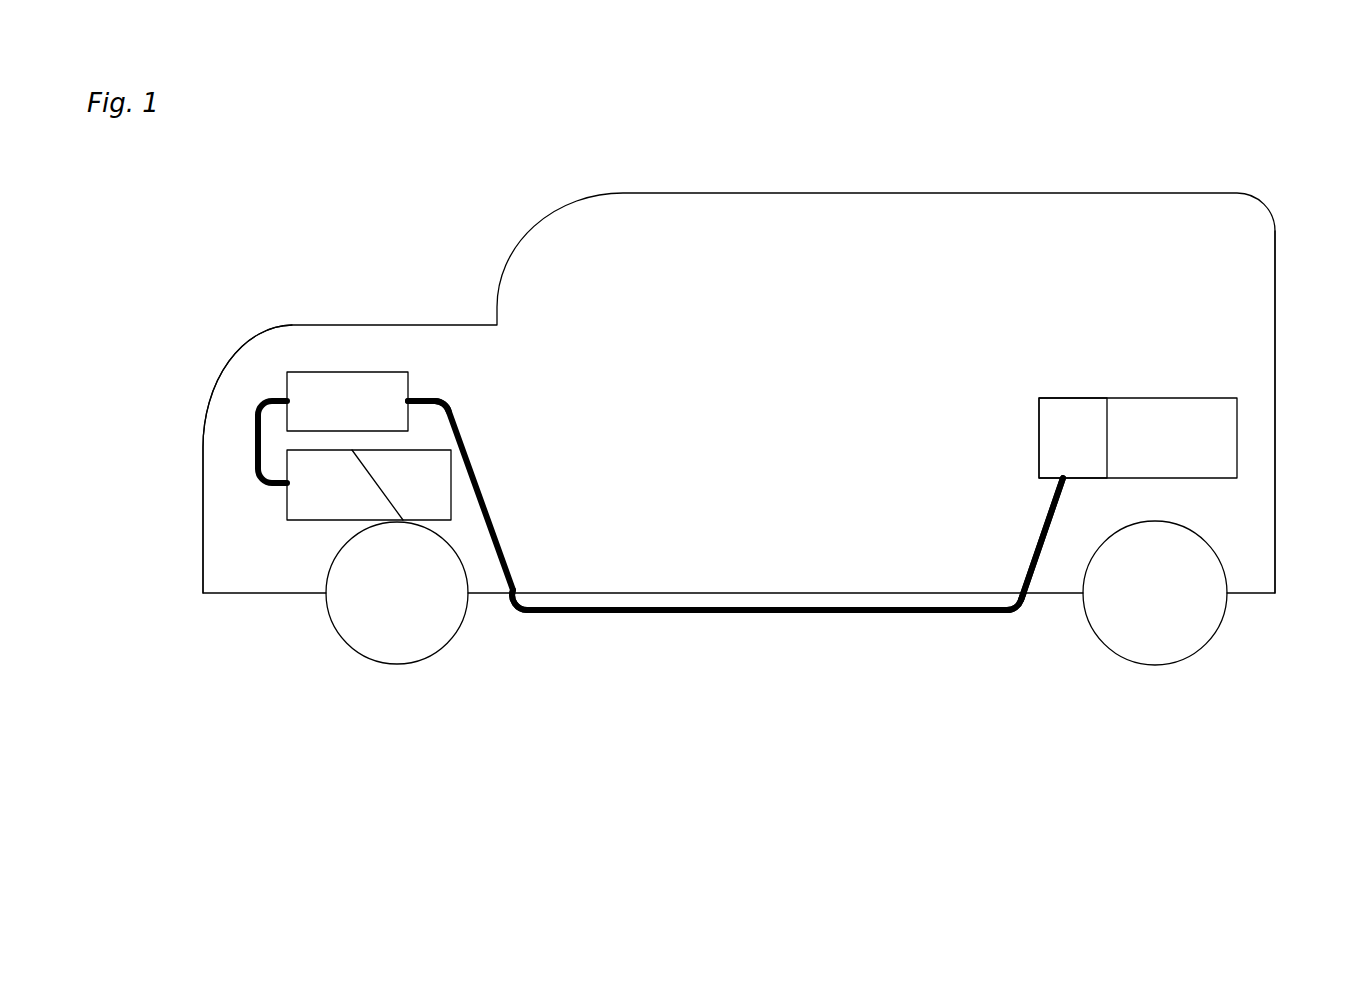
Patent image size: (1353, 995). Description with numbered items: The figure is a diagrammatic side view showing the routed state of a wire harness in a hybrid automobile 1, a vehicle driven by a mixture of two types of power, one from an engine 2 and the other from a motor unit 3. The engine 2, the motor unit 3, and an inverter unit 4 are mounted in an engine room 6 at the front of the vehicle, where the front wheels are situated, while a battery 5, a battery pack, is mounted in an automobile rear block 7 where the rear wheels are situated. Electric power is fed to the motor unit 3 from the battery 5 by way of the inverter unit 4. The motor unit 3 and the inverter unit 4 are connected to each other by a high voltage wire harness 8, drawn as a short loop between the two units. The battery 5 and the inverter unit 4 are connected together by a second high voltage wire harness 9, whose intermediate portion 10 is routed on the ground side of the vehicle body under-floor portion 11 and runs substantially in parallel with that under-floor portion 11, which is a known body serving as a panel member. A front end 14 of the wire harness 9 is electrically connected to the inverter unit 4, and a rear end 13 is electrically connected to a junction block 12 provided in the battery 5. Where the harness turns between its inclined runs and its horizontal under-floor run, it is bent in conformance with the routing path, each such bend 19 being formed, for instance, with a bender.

The hybrid automobile 1 is at (403, 204).
The engine 2 is at (423, 503).
The motor unit 3 is at (315, 503).
The inverter unit 4 is at (335, 395).
The battery 5 is at (1180, 428).
The engine room 6 is at (232, 547).
The automobile rear block 7 is at (1248, 513).
The high voltage wire harness 8 is at (256, 432).
The high voltage wire harness 9 is at (731, 617).
The intermediate portion 10 is at (790, 614).
The vehicle body under-floor portion 11 is at (892, 595).
The junction block 12 is at (1071, 428).
The rear end 13 is at (1055, 492).
The front end 14 is at (431, 398).
The bend 19 is at (530, 614).